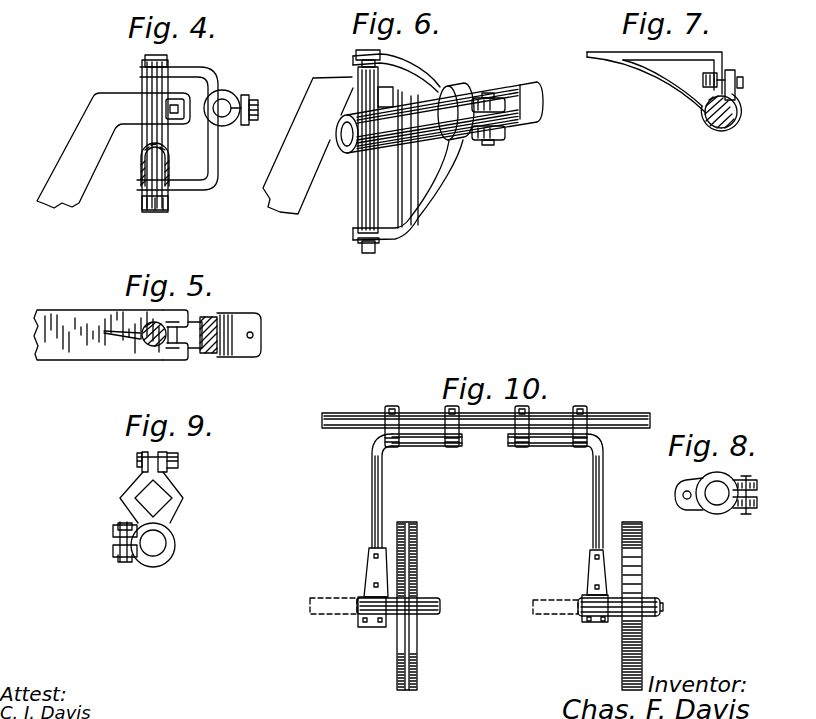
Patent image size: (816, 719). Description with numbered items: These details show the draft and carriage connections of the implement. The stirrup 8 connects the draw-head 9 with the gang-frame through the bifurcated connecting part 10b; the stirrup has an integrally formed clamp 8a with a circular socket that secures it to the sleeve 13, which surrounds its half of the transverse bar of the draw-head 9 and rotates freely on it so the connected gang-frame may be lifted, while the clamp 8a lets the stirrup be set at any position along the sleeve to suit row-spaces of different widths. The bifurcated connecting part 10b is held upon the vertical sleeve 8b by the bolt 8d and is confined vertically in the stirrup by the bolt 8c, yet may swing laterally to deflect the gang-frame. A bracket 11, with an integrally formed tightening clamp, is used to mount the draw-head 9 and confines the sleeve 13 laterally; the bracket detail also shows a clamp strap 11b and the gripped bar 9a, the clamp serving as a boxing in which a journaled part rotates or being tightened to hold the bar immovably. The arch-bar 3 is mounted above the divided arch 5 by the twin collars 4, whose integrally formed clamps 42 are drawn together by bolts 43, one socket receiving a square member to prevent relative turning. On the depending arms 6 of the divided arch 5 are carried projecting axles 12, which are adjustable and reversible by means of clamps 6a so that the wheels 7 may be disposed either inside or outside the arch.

In FIG. 10, the arch-bar 3 is at (486, 412).
In FIG. 10, the twin collars 4 is at (394, 448).
In FIG. 10, the divided arch 5 is at (423, 448).
In FIG. 10, the depending arms 6 is at (384, 500).
In FIG. 10, the clamps 6a is at (364, 590).
In FIG. 10, the wheels 7 is at (418, 568).
In FIG. 4, the stirrup 8 is at (226, 106).
In FIG. 6, the stirrup 8 is at (423, 75).
In FIG. 5, the stirrup 8 is at (207, 318).
In FIG. 8, the stirrup 8 is at (716, 493).
In FIG. 4, the clamp 8a is at (258, 97).
In FIG. 6, the clamp 8a is at (460, 102).
In FIG. 5, the clamp 8a is at (224, 338).
In FIG. 4, the vertical sleeve 8b is at (173, 139).
In FIG. 6, the vertical sleeve 8b is at (362, 208).
In FIG. 5, the vertical sleeve 8b is at (153, 346).
In FIG. 4, the bolt 8c is at (173, 219).
In FIG. 6, the bolt 8c is at (368, 252).
In FIG. 5, the bolt 8c is at (146, 343).
In FIG. 4, the bolt 8d is at (178, 106).
In FIG. 5, the bolt 8d is at (173, 361).
In FIG. 6, the draw-head 9 is at (339, 126).
In FIG. 7, the rod 9a is at (735, 110).
In FIG. 4, the bifurcated connecting part 10b is at (140, 110).
In FIG. 6, the bifurcated connecting part 10b is at (328, 145).
In FIG. 5, the bifurcated connecting part 10b is at (163, 315).
In FIG. 7, the bracket 11 is at (703, 57).
In FIG. 7, the strap 11b is at (738, 68).
In FIG. 10, the axle 12 is at (441, 607).
In FIG. 6, the sleeve 13 is at (365, 160).
In FIG. 9, the clamps 42 is at (179, 461).
In FIG. 9, the bolts 43 is at (175, 464).